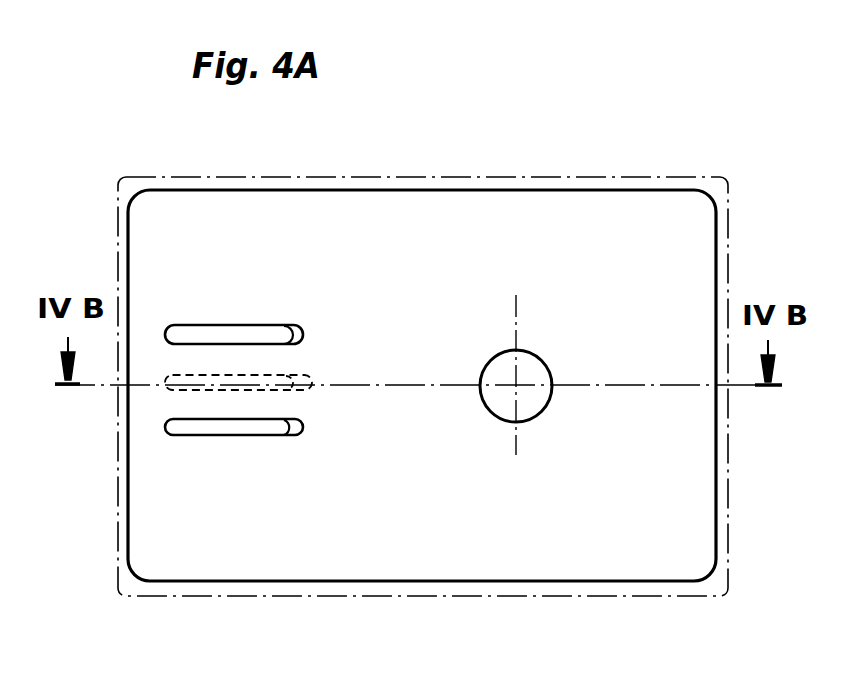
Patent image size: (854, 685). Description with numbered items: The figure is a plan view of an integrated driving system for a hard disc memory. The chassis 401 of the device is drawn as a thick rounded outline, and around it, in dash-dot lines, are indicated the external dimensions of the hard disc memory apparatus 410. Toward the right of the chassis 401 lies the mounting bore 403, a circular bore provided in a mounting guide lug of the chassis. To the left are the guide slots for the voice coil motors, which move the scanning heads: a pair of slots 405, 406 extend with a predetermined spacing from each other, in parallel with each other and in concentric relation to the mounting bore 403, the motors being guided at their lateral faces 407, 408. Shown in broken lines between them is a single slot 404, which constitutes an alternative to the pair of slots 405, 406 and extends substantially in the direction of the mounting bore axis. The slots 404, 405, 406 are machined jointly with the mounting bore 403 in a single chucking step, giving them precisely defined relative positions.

The chassis 401 is at (632, 205).
The mounting bore 403 is at (528, 354).
The slot 404 is at (275, 377).
The slot 405 is at (218, 334).
The slot 406 is at (193, 429).
The lateral face 407 is at (287, 328).
The lateral face 408 is at (263, 438).
The hard disc memory apparatus 410 is at (492, 177).